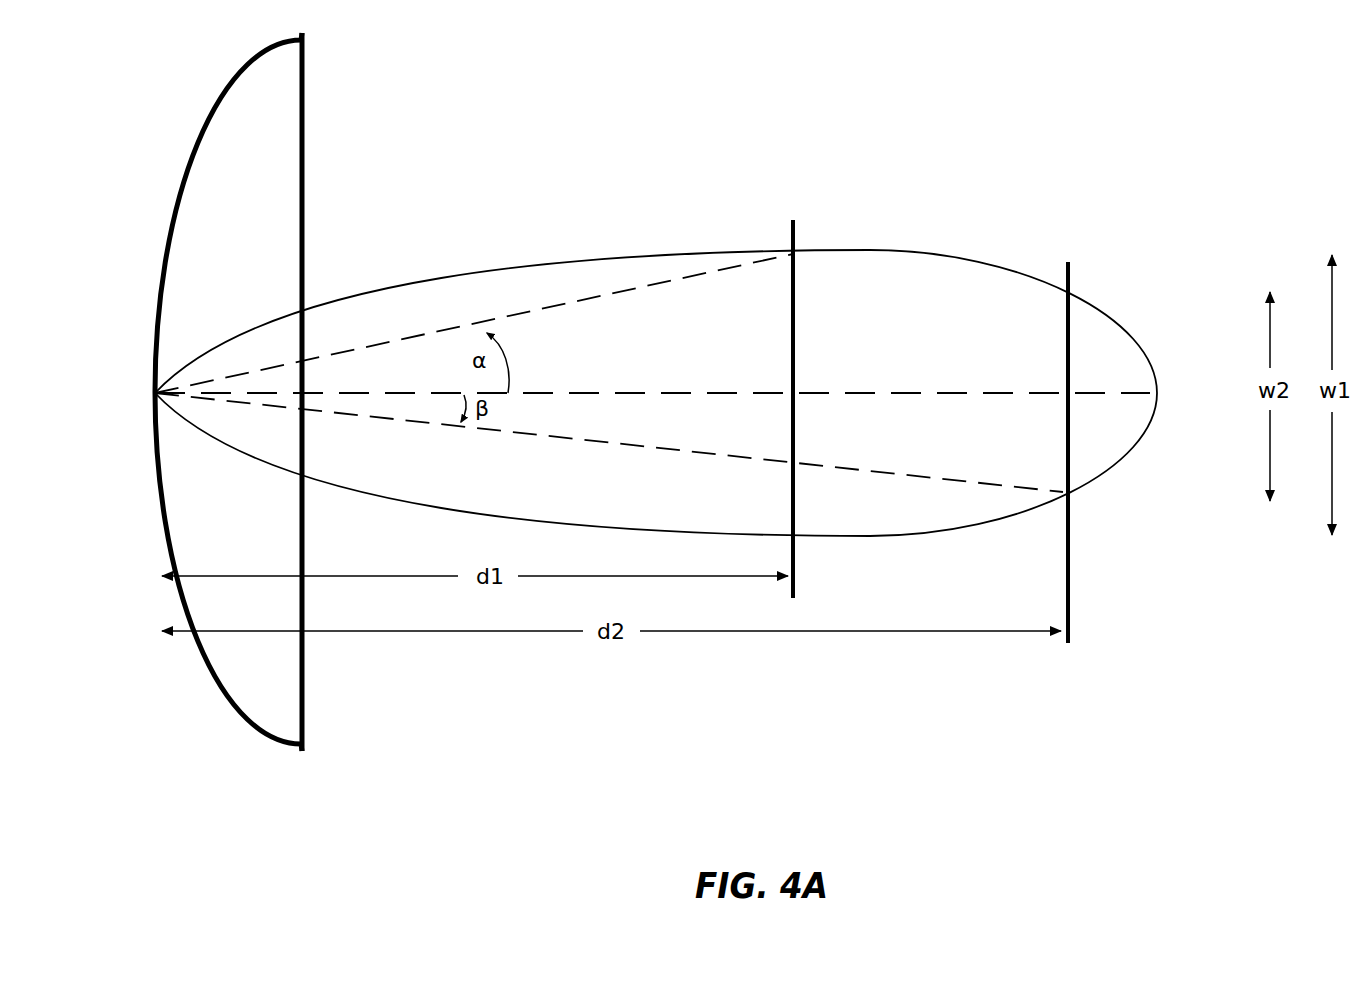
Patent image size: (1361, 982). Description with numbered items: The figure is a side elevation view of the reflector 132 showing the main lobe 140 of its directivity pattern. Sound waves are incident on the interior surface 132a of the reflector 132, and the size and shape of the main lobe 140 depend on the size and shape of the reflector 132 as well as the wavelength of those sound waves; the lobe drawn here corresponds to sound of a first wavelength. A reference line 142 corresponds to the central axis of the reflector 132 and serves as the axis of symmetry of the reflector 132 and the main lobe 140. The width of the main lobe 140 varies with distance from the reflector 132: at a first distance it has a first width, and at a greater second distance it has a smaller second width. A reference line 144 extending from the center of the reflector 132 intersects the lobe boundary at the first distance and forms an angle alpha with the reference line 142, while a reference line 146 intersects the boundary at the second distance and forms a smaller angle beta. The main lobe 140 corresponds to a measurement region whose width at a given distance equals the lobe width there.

The reflector 132 is at (209, 392).
The interior surface 132a is at (165, 286).
The main lobe 140 is at (1125, 331).
The reference line 142 is at (1147, 391).
The reference line 144 is at (607, 296).
The reference line 146 is at (607, 442).